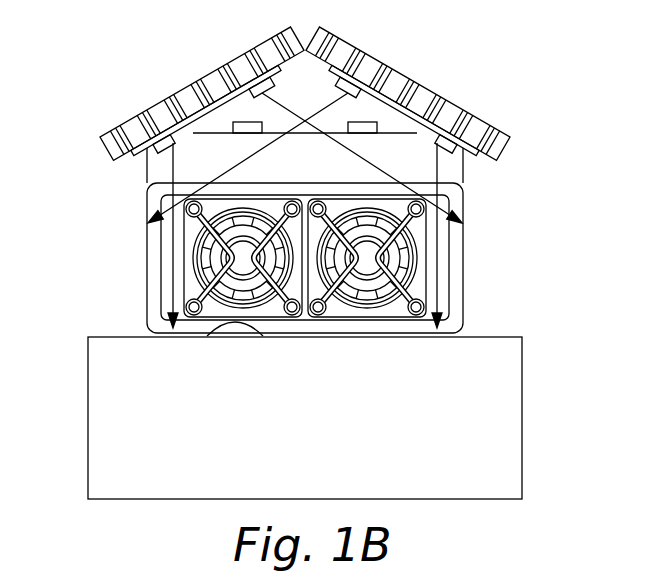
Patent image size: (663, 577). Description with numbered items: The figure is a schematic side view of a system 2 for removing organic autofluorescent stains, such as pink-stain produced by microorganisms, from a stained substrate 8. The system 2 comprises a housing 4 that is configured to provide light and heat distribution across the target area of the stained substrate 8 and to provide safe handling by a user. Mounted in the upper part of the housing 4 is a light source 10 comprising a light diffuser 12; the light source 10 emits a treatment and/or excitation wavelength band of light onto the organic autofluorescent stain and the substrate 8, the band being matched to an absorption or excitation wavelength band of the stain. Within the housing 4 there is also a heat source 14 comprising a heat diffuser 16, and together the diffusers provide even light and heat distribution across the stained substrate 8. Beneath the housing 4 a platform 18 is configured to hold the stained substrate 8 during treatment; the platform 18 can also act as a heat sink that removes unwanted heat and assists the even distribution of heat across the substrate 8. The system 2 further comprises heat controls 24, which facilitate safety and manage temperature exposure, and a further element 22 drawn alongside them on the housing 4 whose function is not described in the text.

The system 2 is at (535, 323).
The housing 4 is at (462, 238).
The stained substrate 8 is at (213, 333).
The light source 10 is at (103, 135).
The light diffuser 12 is at (147, 157).
The heat source 14 is at (463, 272).
The heat diffuser 16 is at (183, 267).
The platform 18 is at (88, 337).
The post 22 is at (245, 122).
The heat controls 24 is at (365, 122).